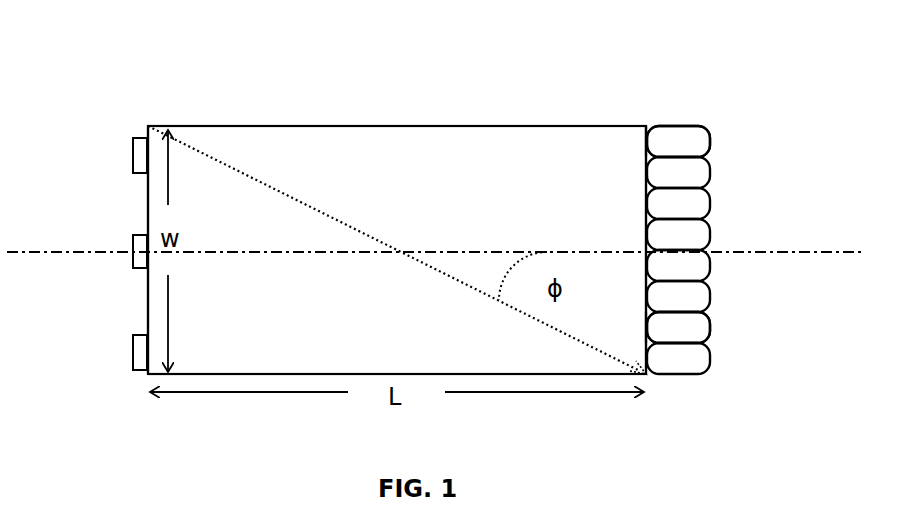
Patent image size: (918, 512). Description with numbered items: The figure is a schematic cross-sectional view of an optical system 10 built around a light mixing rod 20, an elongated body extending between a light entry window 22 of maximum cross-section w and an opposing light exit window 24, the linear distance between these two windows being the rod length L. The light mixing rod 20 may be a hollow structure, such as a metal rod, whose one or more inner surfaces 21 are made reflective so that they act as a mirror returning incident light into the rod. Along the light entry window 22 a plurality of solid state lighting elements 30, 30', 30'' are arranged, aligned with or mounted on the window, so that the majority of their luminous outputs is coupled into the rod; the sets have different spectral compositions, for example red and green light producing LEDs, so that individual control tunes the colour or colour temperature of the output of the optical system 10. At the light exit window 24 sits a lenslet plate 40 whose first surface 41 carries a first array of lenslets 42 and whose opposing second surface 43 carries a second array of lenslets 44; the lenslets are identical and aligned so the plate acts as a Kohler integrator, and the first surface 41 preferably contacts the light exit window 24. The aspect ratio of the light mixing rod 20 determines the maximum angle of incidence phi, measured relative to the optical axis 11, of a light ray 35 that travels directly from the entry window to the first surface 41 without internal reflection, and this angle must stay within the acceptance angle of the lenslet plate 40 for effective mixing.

The optical system 10 is at (431, 433).
The optical axis 11 is at (800, 251).
The light mixing rod 20 is at (375, 138).
The inner surfaces 21 is at (438, 128).
The light entry window 22 is at (148, 200).
The light exit window 24 is at (646, 212).
The solid state lighting element 30 is at (102, 153).
The solid state lighting element 30' is at (101, 266).
The solid state lighting element 30'' is at (99, 348).
The light ray 35 is at (427, 264).
The lenslet plate 40 is at (678, 132).
The first surface 41 is at (645, 121).
The first array of lenslets 42 is at (652, 330).
The second surface 43 is at (711, 118).
The second array of lenslets 44 is at (706, 328).